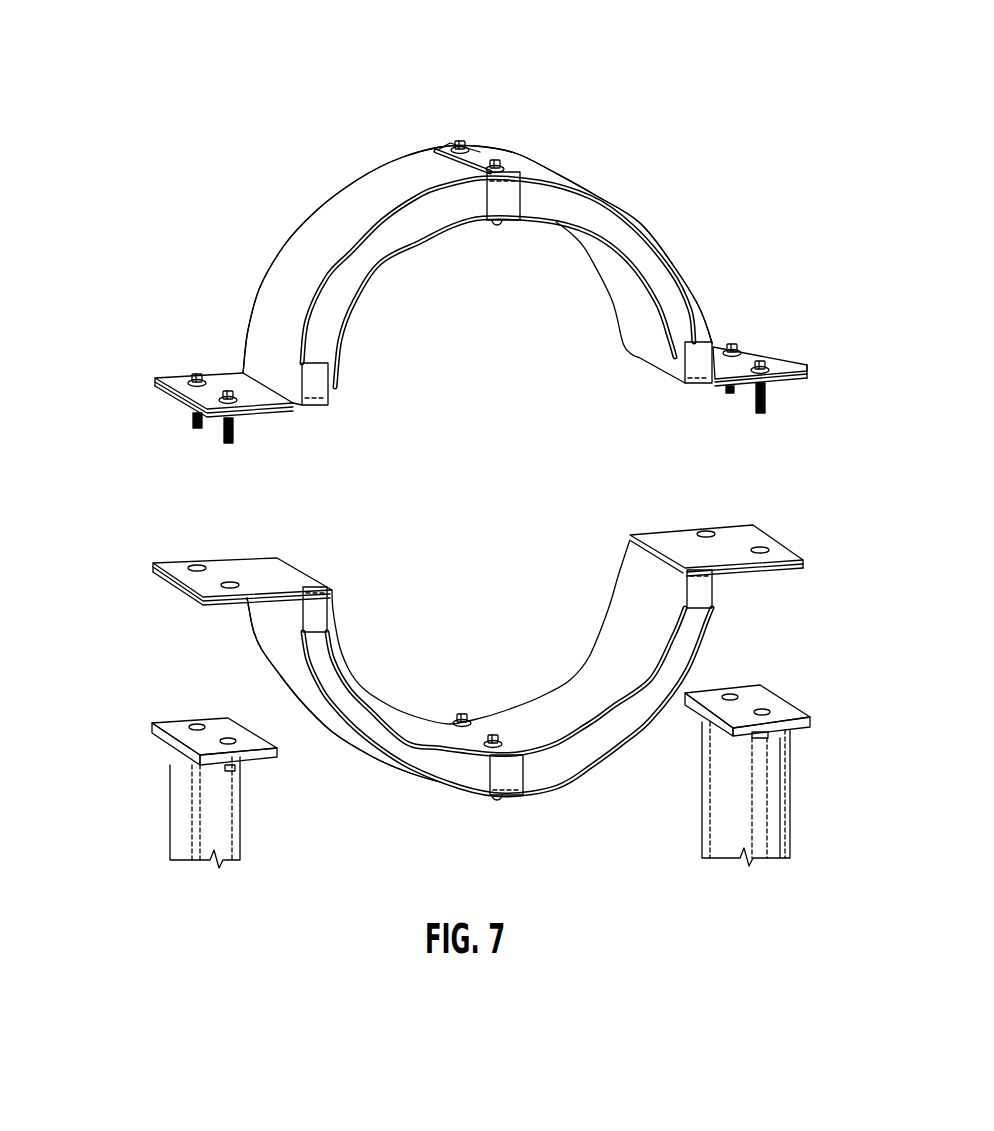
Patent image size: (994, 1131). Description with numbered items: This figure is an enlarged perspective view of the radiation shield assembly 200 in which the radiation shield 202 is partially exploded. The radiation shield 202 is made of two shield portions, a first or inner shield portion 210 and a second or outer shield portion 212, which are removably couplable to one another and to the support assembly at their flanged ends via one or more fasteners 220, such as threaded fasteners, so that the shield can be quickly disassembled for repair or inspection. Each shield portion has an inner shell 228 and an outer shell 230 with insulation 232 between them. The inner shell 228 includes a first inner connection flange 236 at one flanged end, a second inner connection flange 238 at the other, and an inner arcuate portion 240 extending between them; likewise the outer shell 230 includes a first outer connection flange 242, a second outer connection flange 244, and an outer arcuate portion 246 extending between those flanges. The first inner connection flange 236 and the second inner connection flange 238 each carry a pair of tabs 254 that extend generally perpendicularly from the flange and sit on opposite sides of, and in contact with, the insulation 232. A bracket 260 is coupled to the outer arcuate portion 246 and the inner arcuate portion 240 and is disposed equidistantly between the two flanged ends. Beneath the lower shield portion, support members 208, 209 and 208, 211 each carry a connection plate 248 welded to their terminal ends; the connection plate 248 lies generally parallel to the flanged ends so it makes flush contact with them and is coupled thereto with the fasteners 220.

The radiation shield assembly 200 is at (712, 80).
The radiation shield 202 is at (738, 152).
The second or outer shield portion 212 is at (269, 162).
The first or inner shield portion 210 is at (624, 790).
The outer shell 230 is at (372, 188).
The insulation 232 is at (420, 242).
The inner shell 228 is at (378, 290).
The inner arcuate portion 240 is at (553, 223).
The tabs 254 is at (316, 389).
The outer arcuate portion 246 is at (533, 163).
The bracket 260 is at (463, 143).
The first inner connection flange 236 is at (242, 461).
The second inner connection flange 238 is at (722, 460).
The first outer connection flange 242 is at (228, 378).
The second outer connection flange 244 is at (750, 350).
The fasteners 220 is at (196, 372).
The connection plate 248 is at (173, 727).
The support post 208 is at (475, 795).
The support member 209 is at (202, 825).
The support member 211 is at (758, 803).